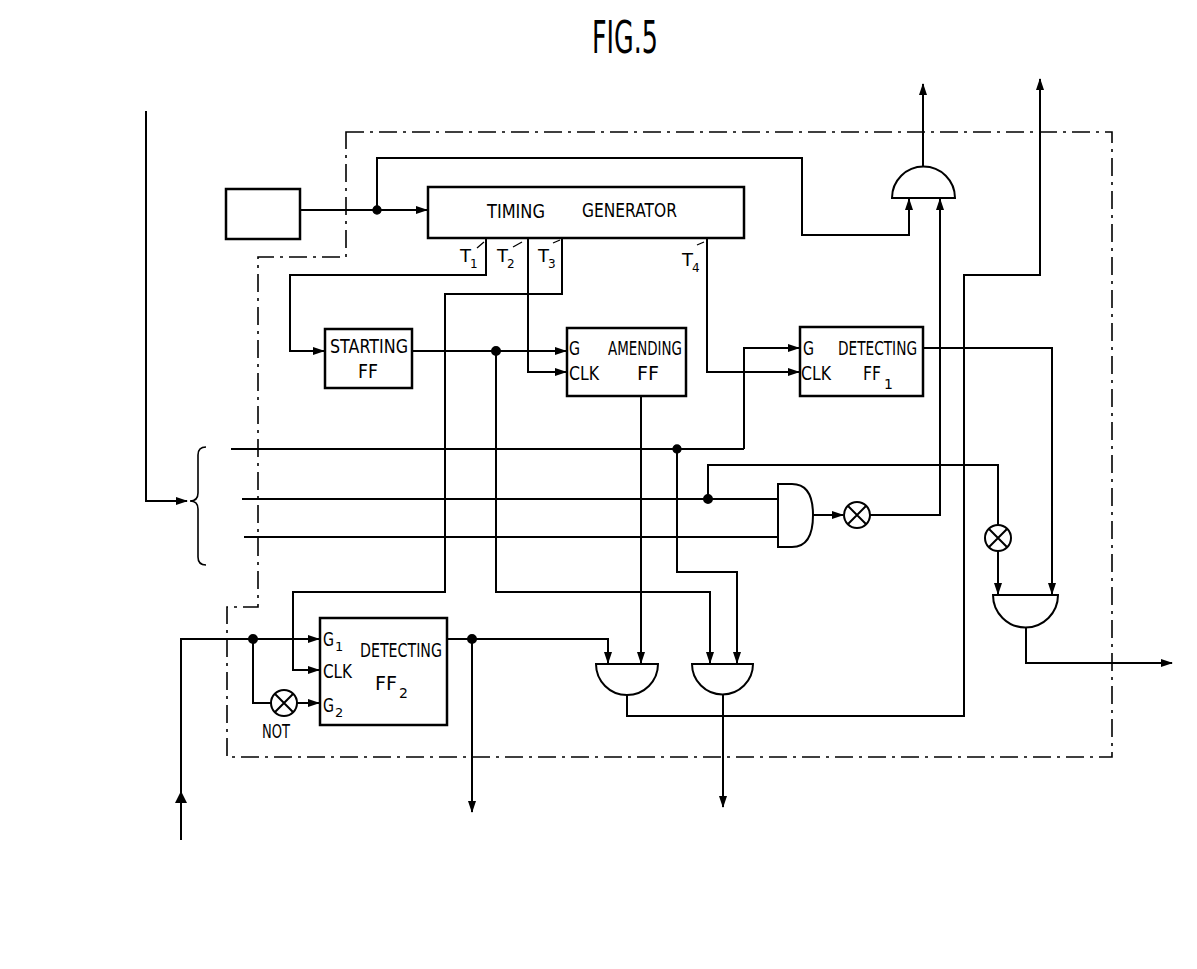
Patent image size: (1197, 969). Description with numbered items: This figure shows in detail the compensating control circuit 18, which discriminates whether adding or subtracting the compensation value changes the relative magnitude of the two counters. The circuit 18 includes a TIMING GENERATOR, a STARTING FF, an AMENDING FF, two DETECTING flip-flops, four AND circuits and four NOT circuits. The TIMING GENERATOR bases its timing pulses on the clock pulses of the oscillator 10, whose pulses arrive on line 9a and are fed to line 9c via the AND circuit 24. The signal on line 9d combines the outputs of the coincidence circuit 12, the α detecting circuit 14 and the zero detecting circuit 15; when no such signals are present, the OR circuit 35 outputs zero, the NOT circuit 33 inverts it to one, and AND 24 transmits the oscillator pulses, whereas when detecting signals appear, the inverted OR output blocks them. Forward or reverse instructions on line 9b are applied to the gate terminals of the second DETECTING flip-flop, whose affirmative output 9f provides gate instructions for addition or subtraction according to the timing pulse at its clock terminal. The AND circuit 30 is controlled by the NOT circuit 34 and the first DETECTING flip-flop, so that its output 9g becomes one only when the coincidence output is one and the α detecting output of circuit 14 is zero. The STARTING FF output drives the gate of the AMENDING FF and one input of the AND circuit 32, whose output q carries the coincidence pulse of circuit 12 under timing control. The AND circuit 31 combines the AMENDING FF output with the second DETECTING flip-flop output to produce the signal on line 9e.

The oscillator 10 is at (247, 186).
The oscillator input line 9a is at (324, 210).
The forward/reverse instruction line 9b is at (181, 748).
The oscillator pulse output line 9c is at (924, 123).
The detecting signal input line 9d is at (146, 311).
The output line of AND 31 9e is at (1041, 119).
The affirmative output line of DETECTING FF2 9f is at (475, 790).
The output line of AND 30 9g is at (1130, 663).
The coincidence detecting circuit 12 is at (485, 441).
The α detecting circuit 14 is at (502, 489).
The zero detecting circuit 15 is at (503, 528).
The compensating control circuit 18 is at (1112, 218).
The AND circuit 24 is at (948, 185).
The AND circuit 30 is at (1044, 614).
The AND circuit 31 is at (604, 692).
The AND circuit 32 is at (752, 670).
The NOT circuit 33 is at (860, 503).
The NOT circuit 34 is at (1010, 535).
The OR circuit 35 is at (797, 488).
The output of AND 32 q is at (724, 783).